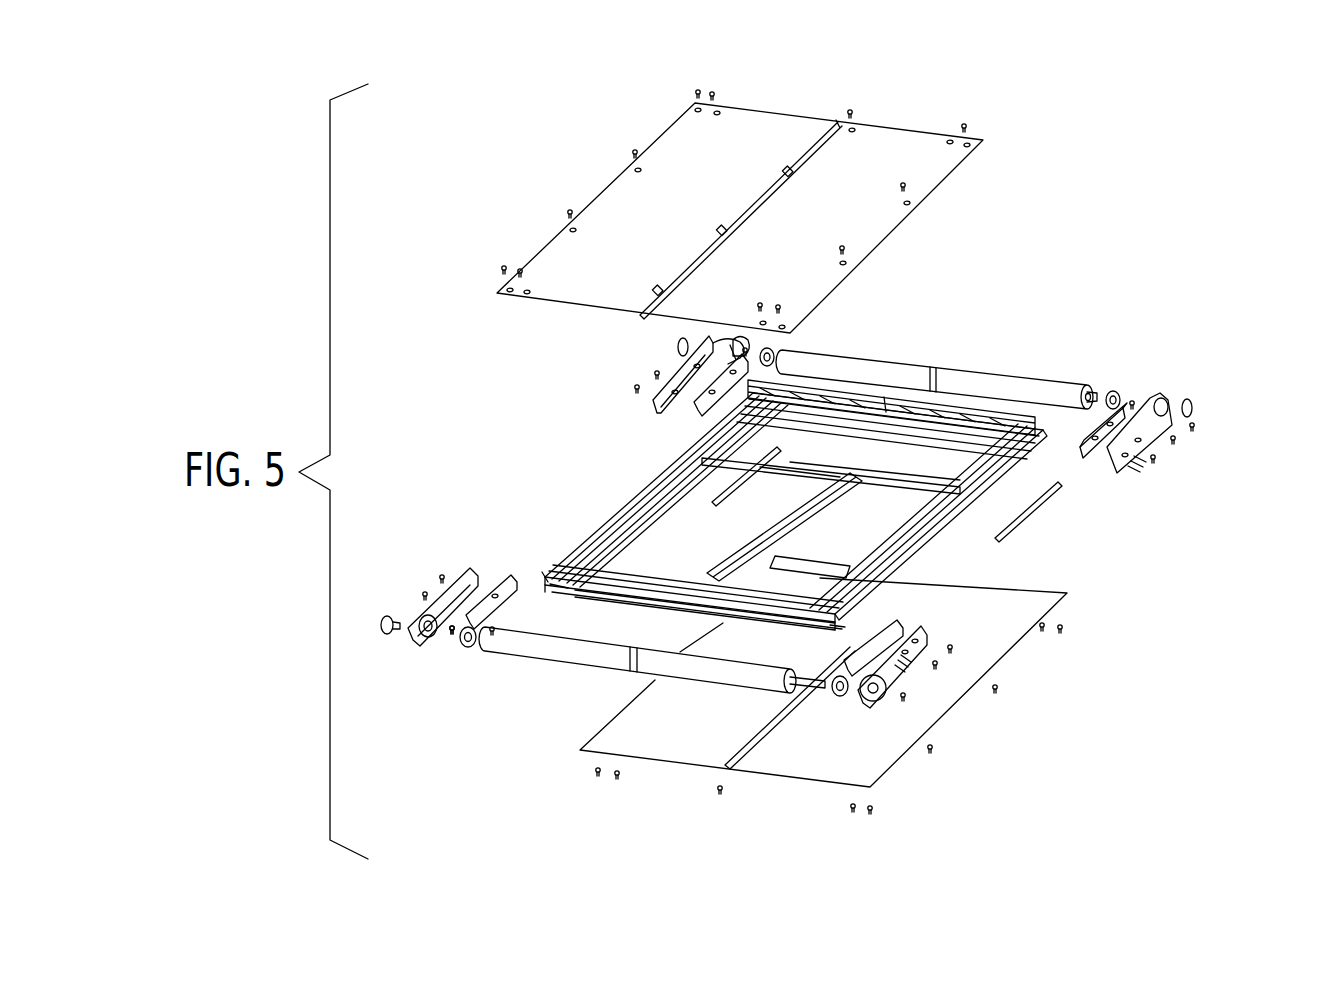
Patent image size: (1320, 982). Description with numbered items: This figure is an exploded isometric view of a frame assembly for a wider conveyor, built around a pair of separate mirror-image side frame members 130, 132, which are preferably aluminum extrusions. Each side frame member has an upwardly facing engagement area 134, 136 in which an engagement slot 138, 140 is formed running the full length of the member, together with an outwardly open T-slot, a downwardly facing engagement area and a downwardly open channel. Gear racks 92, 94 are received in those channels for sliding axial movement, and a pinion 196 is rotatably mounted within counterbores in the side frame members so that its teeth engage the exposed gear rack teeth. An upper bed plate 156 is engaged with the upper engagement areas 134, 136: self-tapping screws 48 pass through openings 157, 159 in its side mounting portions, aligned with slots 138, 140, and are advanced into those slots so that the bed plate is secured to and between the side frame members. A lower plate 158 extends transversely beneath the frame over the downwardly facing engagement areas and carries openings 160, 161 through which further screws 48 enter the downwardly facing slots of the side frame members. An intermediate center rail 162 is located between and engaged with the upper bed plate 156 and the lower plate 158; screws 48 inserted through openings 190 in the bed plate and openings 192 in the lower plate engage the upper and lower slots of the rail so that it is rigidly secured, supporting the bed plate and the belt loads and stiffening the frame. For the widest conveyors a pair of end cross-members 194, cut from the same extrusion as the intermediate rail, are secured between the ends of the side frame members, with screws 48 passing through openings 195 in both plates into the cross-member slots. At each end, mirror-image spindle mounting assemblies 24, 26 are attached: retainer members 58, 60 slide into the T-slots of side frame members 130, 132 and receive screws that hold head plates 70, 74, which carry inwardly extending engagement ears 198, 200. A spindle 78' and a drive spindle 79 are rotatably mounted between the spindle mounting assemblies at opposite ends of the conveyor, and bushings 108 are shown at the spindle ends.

The spindle mounting assembly 24 is at (774, 537).
The spindle mounting assembly 26 is at (805, 477).
The self-tapping screws 48 is at (712, 92).
The retainer member 58 is at (690, 415).
The retainer member 60 is at (1082, 455).
The head plate 70 is at (652, 385).
The head plate 74 is at (1163, 450).
The spindle 78' is at (936, 363).
The drive spindle 79 is at (605, 665).
The gear rack 92 is at (1035, 510).
The gear rack 94 is at (735, 505).
The bushing 108 is at (772, 350).
The side frame member 130 is at (782, 485).
The side frame member 132 is at (945, 572).
The upwardly facing engagement area 134 is at (580, 545).
The upwardly facing engagement area 136 is at (1020, 425).
The engagement slot 138 is at (650, 492).
The engagement slot 140 is at (965, 512).
The upper bed plate 156 is at (782, 103).
The openings 157 is at (573, 228).
The lower plate 158 is at (828, 682).
The openings 159 is at (968, 146).
The openings 160 is at (722, 625).
The openings 161 is at (1065, 594).
The intermediate center rail 162 is at (843, 500).
The openings 190 is at (790, 190).
The openings 192 is at (840, 643).
The end cross-members 194 is at (927, 418).
The openings 195 is at (853, 128).
The pinion 196 is at (735, 470).
The engagement ear 198 is at (738, 340).
The engagement ear 200 is at (1138, 410).